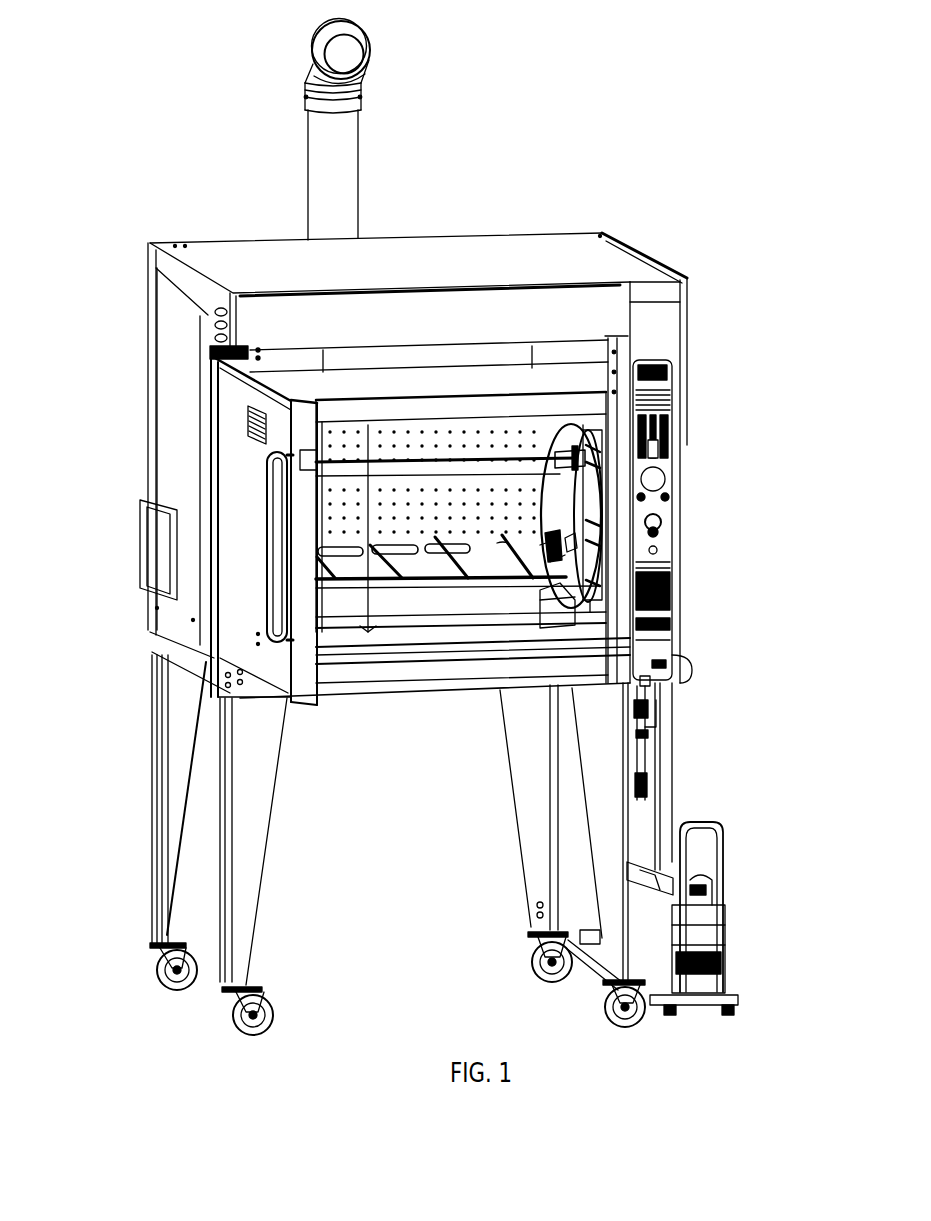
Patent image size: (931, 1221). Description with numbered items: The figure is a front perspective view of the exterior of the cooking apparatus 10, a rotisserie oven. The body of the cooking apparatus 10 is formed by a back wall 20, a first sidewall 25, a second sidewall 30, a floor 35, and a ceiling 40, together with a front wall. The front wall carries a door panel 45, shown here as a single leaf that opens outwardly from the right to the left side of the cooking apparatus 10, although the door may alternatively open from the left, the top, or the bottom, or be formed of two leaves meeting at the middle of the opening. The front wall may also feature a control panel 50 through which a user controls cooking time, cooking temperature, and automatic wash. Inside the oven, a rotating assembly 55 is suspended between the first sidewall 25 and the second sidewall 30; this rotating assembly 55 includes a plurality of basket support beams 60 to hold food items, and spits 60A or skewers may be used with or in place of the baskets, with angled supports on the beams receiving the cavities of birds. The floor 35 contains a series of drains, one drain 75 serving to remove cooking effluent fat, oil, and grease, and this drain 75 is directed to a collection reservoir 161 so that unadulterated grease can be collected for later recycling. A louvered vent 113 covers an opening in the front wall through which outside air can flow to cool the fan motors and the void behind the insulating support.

The cooking apparatus 10 is at (155, 195).
The back wall 20 is at (145, 316).
The first sidewall 25 is at (183, 427).
The second sidewall 30 is at (585, 588).
The floor 35 is at (456, 625).
The ceiling 40 is at (446, 243).
The door panel 45 is at (246, 520).
The control panel 50 is at (664, 522).
The rotating assembly 55 is at (566, 504).
The basket support beams 60 is at (394, 592).
The spit rod 60A is at (483, 468).
The drain 75 is at (679, 766).
The louvered vent 113 is at (211, 318).
The collection reservoir 161 is at (724, 955).